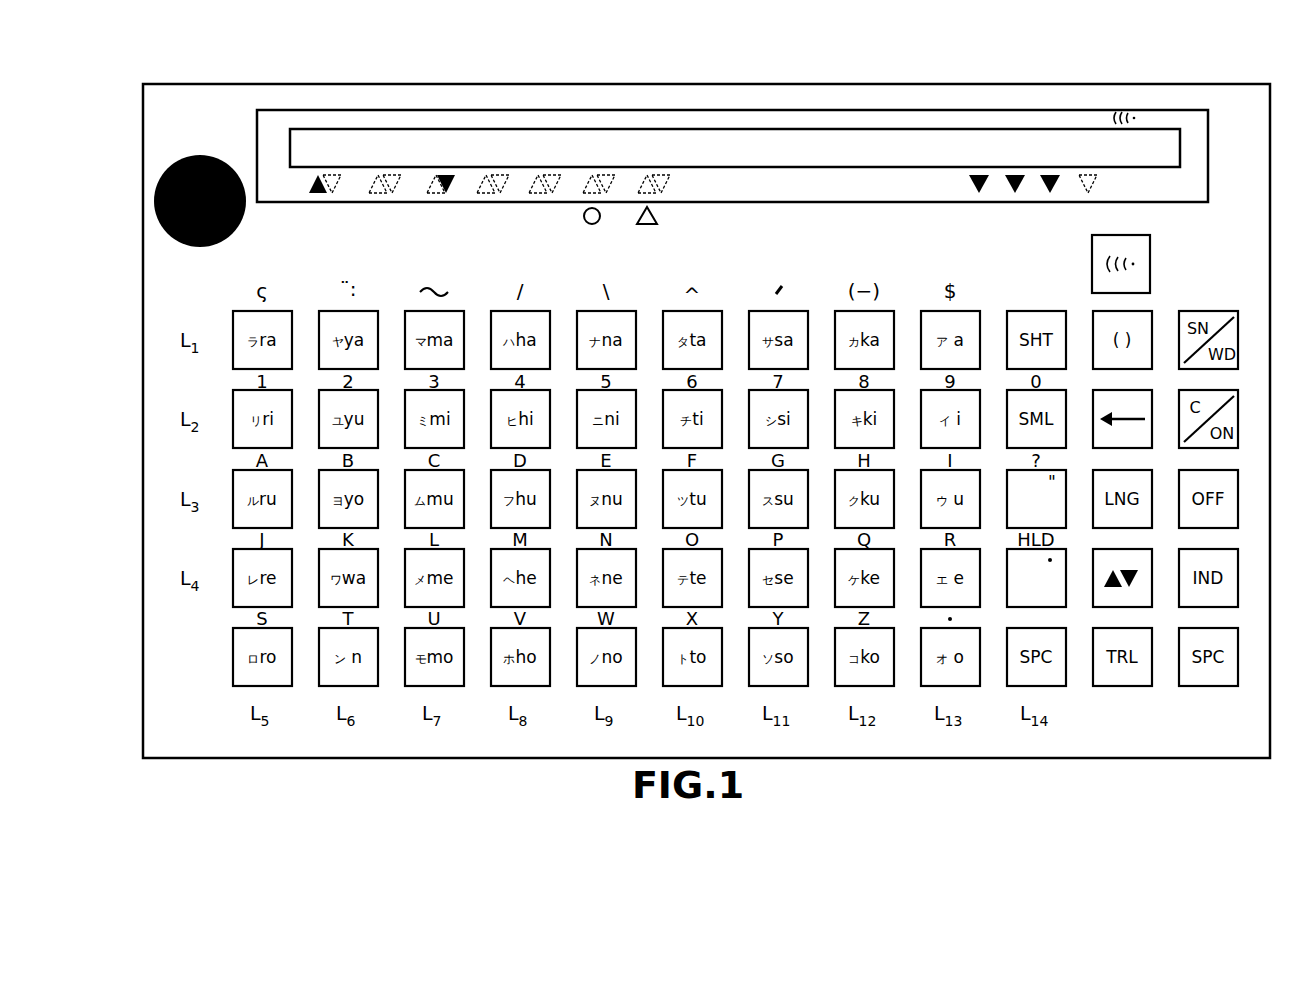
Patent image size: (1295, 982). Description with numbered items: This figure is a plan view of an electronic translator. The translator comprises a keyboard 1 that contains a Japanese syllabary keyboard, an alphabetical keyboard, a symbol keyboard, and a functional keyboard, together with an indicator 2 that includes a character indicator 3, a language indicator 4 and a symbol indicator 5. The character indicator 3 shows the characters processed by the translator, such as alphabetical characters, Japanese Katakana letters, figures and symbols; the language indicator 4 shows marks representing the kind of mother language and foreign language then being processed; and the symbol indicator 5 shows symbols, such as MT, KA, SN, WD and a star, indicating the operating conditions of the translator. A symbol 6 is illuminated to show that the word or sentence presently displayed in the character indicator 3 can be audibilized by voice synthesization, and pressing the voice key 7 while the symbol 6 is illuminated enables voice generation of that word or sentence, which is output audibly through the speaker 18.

The keyboard 1 is at (663, 499).
The indicator 2 is at (850, 166).
The character indicator 3 is at (790, 149).
The language indicator 4 is at (473, 177).
The symbol indicator 5 is at (1072, 183).
The symbol 6 is at (1130, 112).
The voice key 7 is at (1151, 262).
The speaker 18 is at (188, 156).